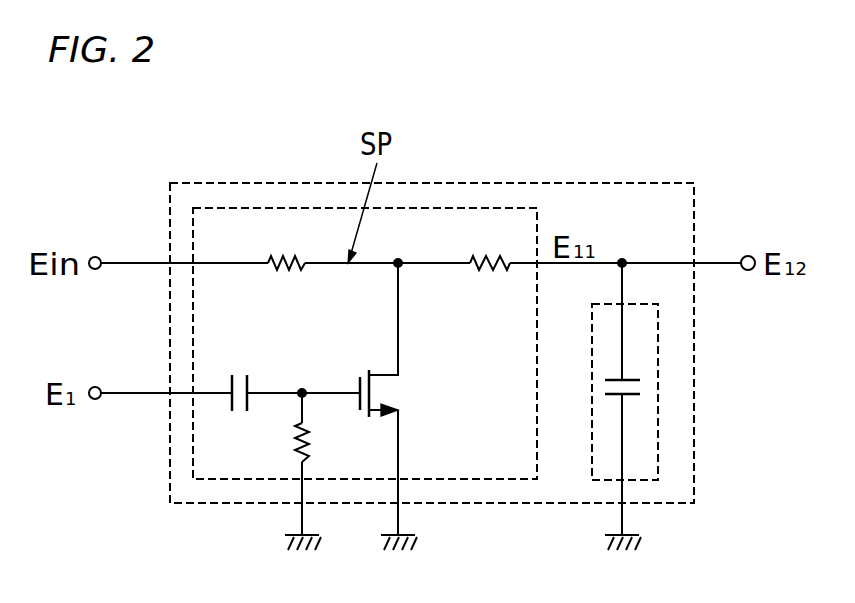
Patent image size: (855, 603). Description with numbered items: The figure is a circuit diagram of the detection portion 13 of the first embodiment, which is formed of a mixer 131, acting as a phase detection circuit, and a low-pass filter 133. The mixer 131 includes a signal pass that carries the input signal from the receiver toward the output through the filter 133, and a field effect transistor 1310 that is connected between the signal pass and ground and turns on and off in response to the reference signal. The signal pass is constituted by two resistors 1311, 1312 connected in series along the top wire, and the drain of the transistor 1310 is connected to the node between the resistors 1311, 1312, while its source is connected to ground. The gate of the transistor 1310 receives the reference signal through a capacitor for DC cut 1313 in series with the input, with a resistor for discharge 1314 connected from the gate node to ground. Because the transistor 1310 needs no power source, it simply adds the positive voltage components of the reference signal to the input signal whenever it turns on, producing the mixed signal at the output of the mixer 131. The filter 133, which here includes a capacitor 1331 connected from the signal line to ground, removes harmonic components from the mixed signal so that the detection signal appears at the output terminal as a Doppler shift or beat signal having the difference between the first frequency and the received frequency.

The detection portion 13 is at (697, 183).
The mixer 131 is at (457, 207).
The low-pass filter 133 is at (658, 418).
The field effect transistor 1310 is at (415, 393).
The resistor 1311 is at (284, 283).
The resistor 1312 is at (486, 283).
The capacitor for DC cut 1313 is at (241, 375).
The resistor for discharge 1314 is at (267, 449).
The capacitor 1331 is at (632, 371).